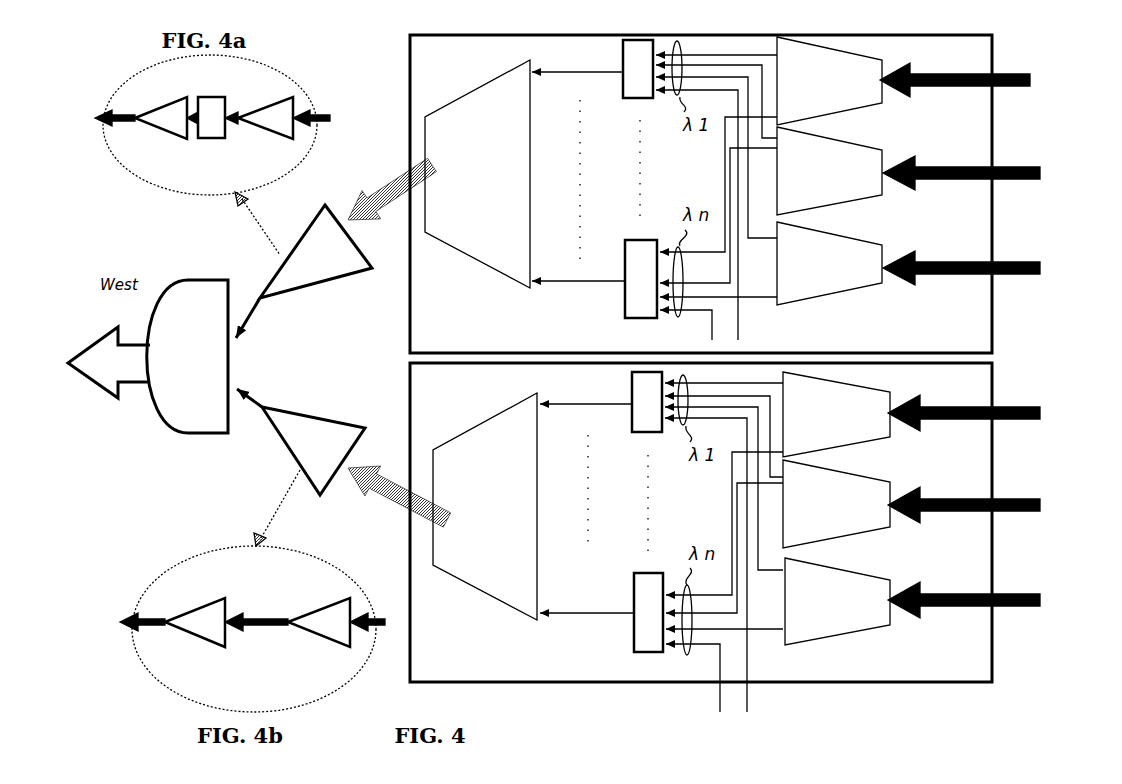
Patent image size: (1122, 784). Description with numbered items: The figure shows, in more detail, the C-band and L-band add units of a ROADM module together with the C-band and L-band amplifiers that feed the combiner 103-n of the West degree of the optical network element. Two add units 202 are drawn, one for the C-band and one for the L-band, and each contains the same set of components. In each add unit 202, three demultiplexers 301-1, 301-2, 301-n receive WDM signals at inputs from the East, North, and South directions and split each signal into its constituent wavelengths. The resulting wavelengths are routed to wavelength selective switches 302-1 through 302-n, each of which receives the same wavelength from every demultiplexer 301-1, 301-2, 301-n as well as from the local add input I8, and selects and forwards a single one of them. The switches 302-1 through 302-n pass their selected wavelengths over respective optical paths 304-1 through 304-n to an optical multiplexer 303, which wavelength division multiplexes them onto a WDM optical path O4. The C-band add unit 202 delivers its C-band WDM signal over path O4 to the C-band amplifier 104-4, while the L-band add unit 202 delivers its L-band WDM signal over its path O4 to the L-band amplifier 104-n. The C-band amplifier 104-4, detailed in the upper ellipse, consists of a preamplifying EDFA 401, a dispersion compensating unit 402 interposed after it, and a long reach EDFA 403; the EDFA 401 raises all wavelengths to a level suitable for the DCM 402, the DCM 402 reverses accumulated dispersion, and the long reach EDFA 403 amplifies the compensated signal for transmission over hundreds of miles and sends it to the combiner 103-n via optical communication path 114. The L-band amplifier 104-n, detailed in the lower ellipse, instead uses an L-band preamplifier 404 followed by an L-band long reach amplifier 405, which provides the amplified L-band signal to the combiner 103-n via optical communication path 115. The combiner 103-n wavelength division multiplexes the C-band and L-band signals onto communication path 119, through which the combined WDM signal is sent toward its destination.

In FIG. 4, the combiner 103-n is at (187, 356).
In FIG. 4A, the C-band amplifier 104-4 is at (212, 125).
In FIG. 4, the C-band amplifier 104-4 is at (298, 236).
In FIG. 4B, the L-band amplifier 104-n is at (252, 629).
In FIG. 4, the L-band amplifier 104-n is at (306, 416).
In FIG. 4, the optical communication path 114 is at (262, 306).
In FIG. 4, the optical communication path 115 is at (258, 393).
In FIG. 4, the communication path 119 is at (130, 385).
In FIG. 4, the add unit 202 is at (701, 358).
In FIG. 4, the demultiplexer 301-1 is at (833, 247).
In FIG. 4, the demultiplexer 301-2 is at (833, 337).
In FIG. 4, the demultiplexer 301-n is at (833, 433).
In FIG. 4, the wavelength selective switch 302-1 is at (657, 43).
In FIG. 4, the wavelength selective switch 302-n is at (624, 300).
In FIG. 4, the optical multiplexer 303 is at (481, 340).
In FIG. 4, the optical path 304-1 is at (553, 75).
In FIG. 4, the optical path 304-n is at (548, 285).
In FIG. 4A, the preamplifying erbium doped fiber amplifier 401 is at (272, 139).
In FIG. 4A, the dispersion compensating unit 402 is at (214, 138).
In FIG. 4A, the long reach erbium doped fiber amplifier 403 is at (168, 139).
In FIG. 4B, the L-band preamplifier 404 is at (314, 647).
In FIG. 4B, the L-band long reach amplifier 405 is at (200, 647).
In FIG. 4, the WDM optical path O4 is at (386, 190).
In FIG. 4, the local add input I8 is at (797, 332).